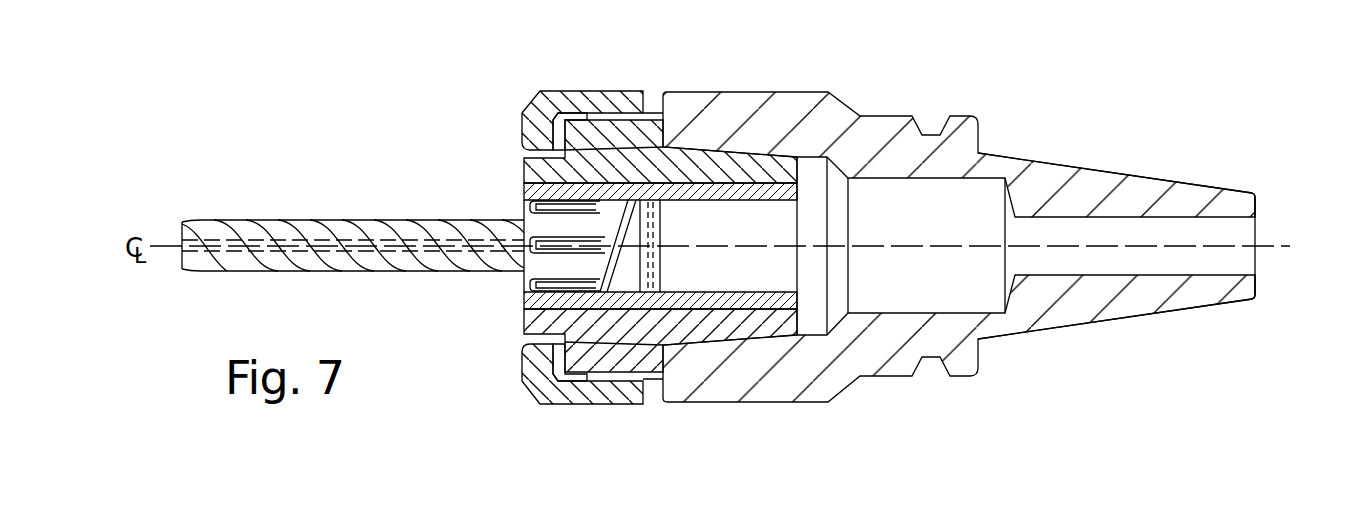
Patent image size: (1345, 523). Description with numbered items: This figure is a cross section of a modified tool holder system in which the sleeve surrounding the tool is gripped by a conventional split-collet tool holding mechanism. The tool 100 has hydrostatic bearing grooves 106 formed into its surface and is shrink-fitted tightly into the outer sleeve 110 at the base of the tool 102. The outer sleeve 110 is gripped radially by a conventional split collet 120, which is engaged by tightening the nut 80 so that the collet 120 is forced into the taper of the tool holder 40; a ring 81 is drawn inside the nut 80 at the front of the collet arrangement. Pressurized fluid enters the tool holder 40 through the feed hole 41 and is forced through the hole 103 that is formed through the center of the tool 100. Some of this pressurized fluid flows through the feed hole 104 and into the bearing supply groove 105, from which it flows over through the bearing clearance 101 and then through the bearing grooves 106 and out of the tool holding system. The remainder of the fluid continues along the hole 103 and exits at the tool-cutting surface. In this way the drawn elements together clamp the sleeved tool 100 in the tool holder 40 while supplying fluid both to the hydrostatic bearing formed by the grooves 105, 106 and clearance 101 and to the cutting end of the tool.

The tool holder 40 is at (1089, 185).
The feed hole 41 is at (1262, 239).
The nut 80 is at (617, 91).
The extraction ring 81 is at (565, 91).
The tool 100 is at (345, 233).
The bearing clearance 101 is at (537, 343).
The base of the tool 102 is at (726, 294).
The hole 103 is at (787, 250).
The feed hole 104 is at (742, 201).
The bearing supply groove 105 is at (698, 204).
The hydrostatic bearing grooves 106 is at (548, 214).
The outer sleeve 110 is at (768, 193).
The split collet 120 is at (770, 323).